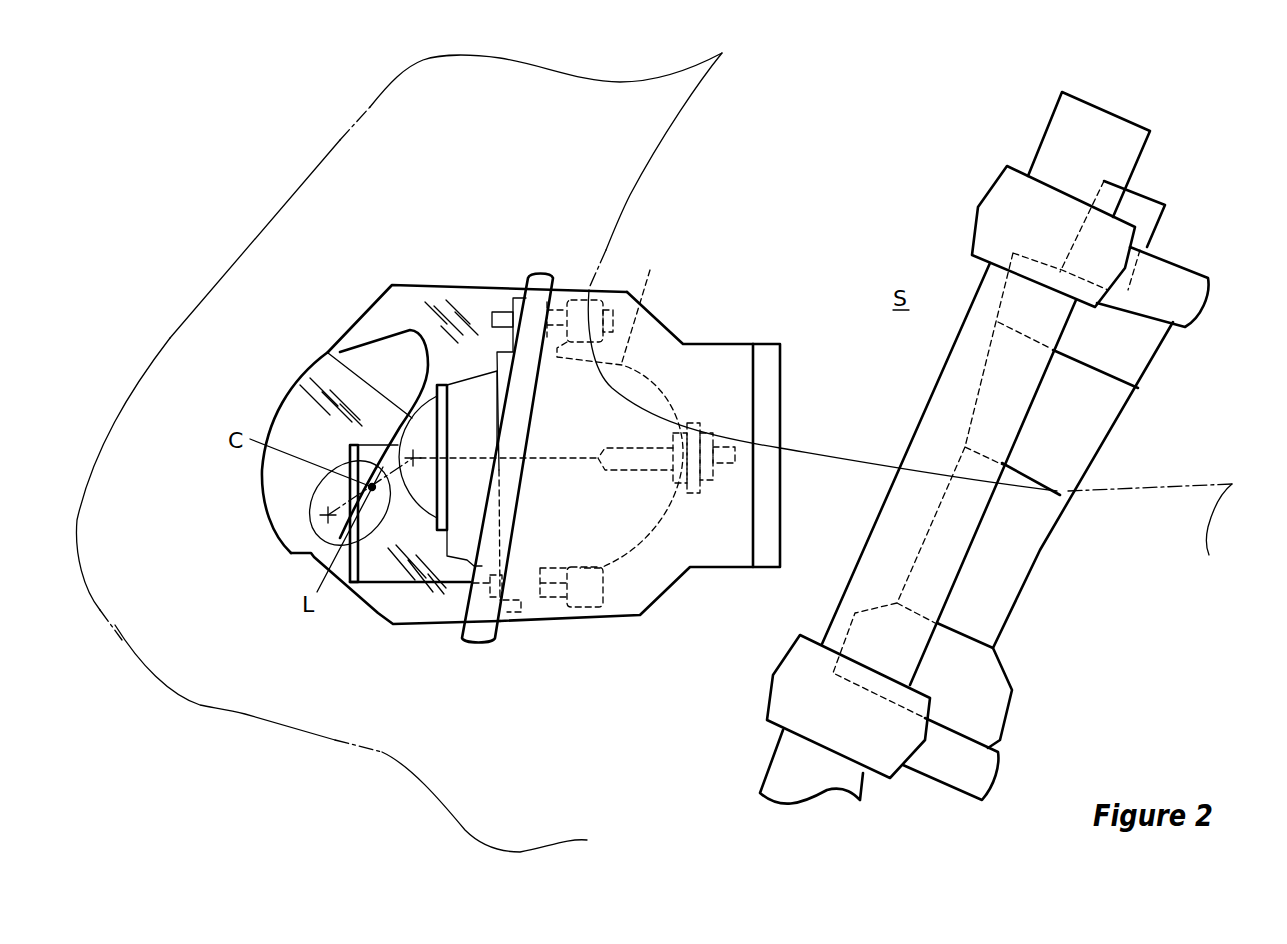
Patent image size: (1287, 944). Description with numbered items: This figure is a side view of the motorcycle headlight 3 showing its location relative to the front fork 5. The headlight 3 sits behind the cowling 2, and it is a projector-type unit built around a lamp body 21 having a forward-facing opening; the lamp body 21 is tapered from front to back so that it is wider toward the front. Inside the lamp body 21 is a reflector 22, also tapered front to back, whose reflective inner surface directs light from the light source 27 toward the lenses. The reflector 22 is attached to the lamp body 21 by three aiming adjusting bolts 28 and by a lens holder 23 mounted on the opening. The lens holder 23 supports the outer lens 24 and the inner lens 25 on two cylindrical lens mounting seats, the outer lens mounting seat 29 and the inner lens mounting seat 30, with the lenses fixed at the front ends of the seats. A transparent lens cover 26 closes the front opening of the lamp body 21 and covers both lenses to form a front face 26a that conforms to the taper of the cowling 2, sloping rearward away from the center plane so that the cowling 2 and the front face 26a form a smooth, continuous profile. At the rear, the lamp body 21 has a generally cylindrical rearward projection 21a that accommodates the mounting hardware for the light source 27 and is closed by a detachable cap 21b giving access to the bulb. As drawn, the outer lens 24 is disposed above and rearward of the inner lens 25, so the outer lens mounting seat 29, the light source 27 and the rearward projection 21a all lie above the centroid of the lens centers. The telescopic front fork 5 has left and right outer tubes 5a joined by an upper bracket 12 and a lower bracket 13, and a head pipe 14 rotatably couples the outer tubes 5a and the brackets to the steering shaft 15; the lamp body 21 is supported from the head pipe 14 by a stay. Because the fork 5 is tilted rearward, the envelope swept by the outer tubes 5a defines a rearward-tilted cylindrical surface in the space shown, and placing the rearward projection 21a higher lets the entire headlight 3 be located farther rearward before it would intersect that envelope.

The cowling 2 is at (210, 708).
The headlight 3 is at (376, 296).
The front fork 5 is at (980, 546).
The outer tubes 5a is at (1065, 330).
The upper bracket 12 is at (1212, 293).
The lower bracket 13 is at (1000, 776).
The head pipe 14 is at (1118, 416).
The steering shaft 15 is at (1160, 228).
The lamp body 21 is at (667, 318).
The rearward projection 21a is at (723, 344).
The detachable cap 21b is at (763, 344).
The reflector 22 is at (620, 403).
The lens holder 23 is at (495, 352).
The outer lens 24 is at (330, 356).
The inner lens 25 is at (312, 528).
The lens cover 26 is at (390, 628).
The front face 26a is at (272, 478).
The light source 27 is at (637, 470).
The aiming adjusting bolts 28 is at (503, 312).
The outer lens mounting seat 29 is at (466, 548).
The inner lens mounting seat 30 is at (414, 590).